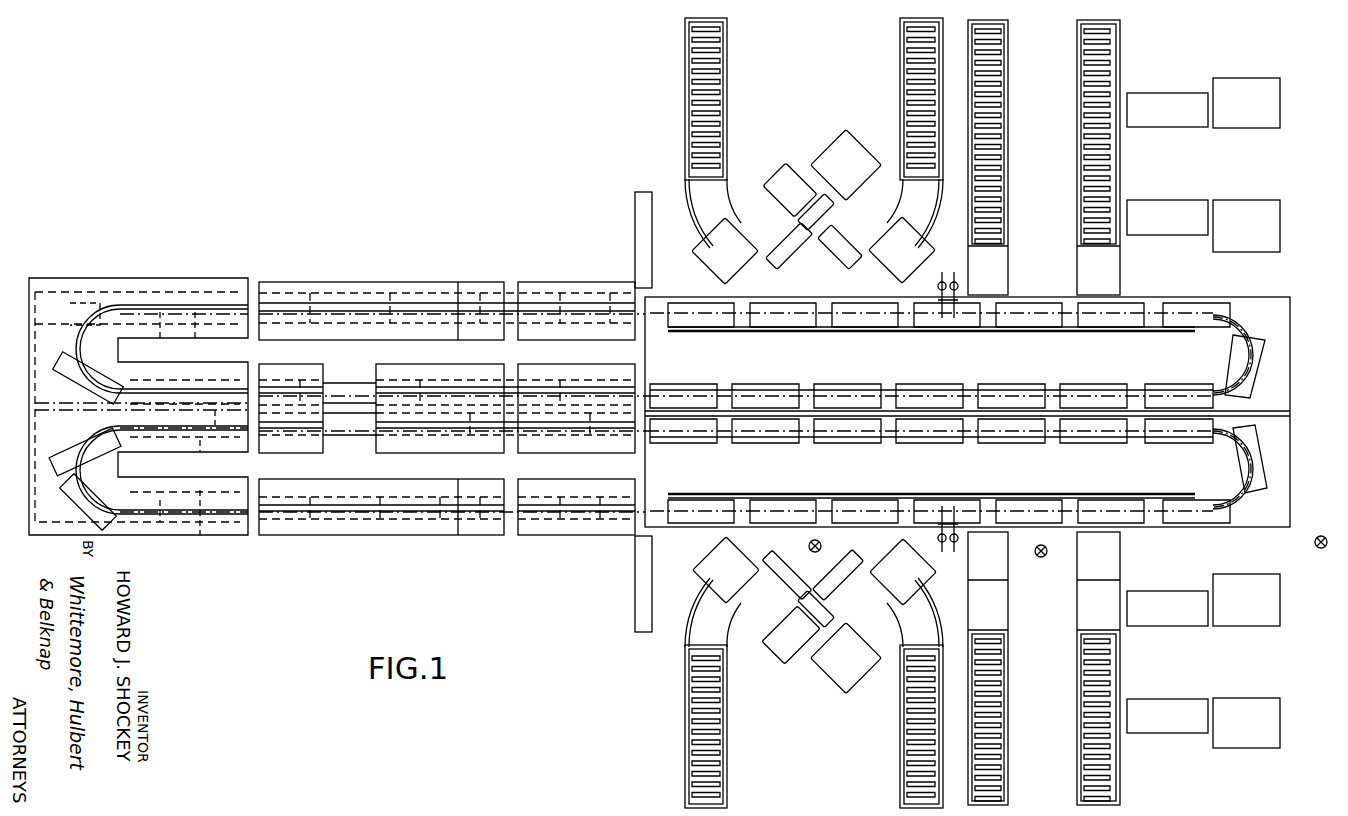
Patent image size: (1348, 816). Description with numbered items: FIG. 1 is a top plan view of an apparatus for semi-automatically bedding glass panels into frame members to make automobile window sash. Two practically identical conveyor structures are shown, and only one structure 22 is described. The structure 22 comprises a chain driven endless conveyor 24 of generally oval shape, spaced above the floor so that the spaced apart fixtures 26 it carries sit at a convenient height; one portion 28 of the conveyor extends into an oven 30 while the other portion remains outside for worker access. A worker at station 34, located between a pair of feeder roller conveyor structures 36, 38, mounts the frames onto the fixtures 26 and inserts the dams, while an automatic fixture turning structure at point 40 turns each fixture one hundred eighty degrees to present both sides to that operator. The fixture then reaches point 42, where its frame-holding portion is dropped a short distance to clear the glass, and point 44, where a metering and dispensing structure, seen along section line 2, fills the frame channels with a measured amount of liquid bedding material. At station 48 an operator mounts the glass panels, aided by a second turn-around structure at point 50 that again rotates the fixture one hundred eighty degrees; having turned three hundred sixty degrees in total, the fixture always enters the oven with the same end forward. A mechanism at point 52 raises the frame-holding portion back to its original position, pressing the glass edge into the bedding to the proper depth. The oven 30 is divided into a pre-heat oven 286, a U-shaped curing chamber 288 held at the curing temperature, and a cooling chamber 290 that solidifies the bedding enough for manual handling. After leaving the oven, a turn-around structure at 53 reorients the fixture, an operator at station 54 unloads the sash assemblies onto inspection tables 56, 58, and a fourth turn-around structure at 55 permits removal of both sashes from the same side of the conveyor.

The section line 2- 2 is at (952, 516).
The structure 22 is at (984, 447).
The chain driven endless conveyor 24 is at (1259, 510).
The fixture 26 is at (1247, 440).
The portion of conveyor 28 is at (553, 515).
The oven 30 is at (465, 535).
The operator station 34 is at (1043, 557).
The feeder roller conveyor structure 36 is at (1005, 620).
The feeder roller conveyor structure 38 is at (1078, 650).
The automatic fixture turning structure location 40 is at (1052, 493).
The fixture dropping point 42 is at (995, 493).
The metering and dispensing point 44 is at (940, 495).
The glass mounting station 48 is at (823, 543).
The second turn-around structure 50 is at (797, 493).
The fixture raising mechanism point 52 is at (705, 493).
The turn-around structure 53 is at (838, 441).
The unloading station 54 is at (1316, 547).
The fourth turn-around structure 55 is at (1240, 476).
The inspection table 56 is at (1168, 580).
The inspection table 58 is at (1168, 698).
The pre-heat oven 286 is at (605, 535).
The U-shaped chamber 288 is at (290, 537).
The cooling chamber 290 is at (447, 451).